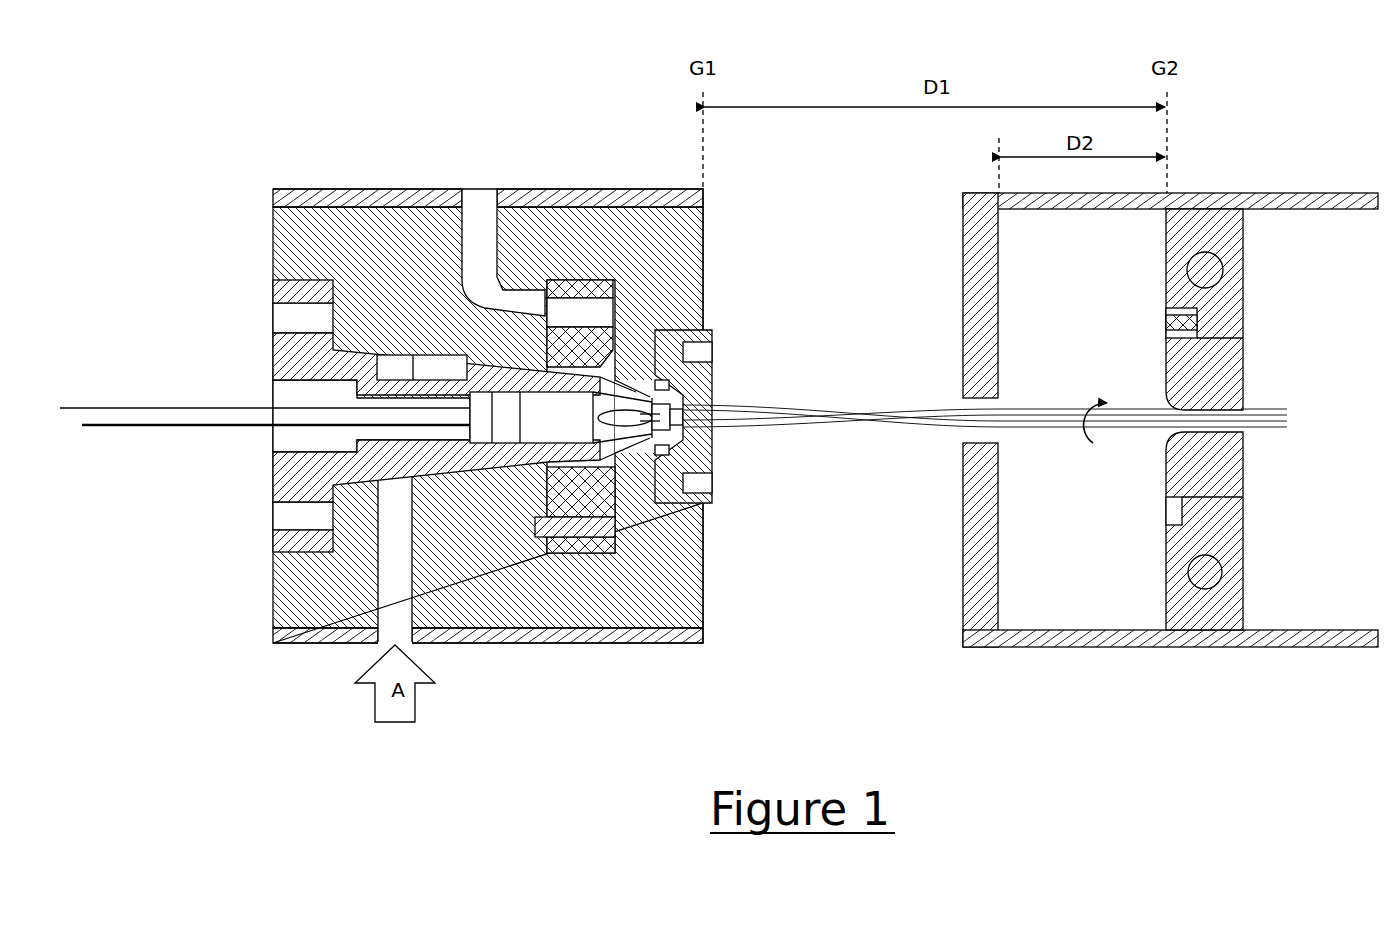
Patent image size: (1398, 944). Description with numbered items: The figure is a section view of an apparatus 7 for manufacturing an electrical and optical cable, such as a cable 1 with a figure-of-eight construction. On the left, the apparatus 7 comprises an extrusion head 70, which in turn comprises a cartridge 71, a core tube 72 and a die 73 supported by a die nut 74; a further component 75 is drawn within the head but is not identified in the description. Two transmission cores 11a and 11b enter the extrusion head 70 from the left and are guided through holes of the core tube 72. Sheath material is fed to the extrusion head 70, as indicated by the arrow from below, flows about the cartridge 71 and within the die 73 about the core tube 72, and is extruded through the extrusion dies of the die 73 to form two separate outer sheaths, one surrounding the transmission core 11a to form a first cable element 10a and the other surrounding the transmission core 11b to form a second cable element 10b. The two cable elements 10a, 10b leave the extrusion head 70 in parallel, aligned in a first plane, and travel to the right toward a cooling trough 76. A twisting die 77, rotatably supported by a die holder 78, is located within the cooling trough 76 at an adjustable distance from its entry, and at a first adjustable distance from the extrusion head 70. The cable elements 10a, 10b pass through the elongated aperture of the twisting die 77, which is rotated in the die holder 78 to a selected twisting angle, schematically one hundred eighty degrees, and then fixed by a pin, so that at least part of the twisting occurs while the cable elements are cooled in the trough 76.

The cable 1 is at (1170, 446).
The apparatus 7 is at (662, 143).
The first cable element 10a is at (770, 406).
The second cable element 10b is at (762, 430).
The first transmission core 11a is at (240, 407).
The second transmission core 11b is at (248, 428).
The extrusion head 70 is at (382, 188).
The cartridge 71 is at (272, 349).
The core tube 72 is at (537, 392).
The die 73 is at (640, 453).
The die nut 74 is at (713, 332).
The retaining plate 75 is at (566, 553).
The cooling trough 76 is at (1057, 648).
The twisting die 77 is at (1231, 325).
The die holder 78 is at (1245, 232).